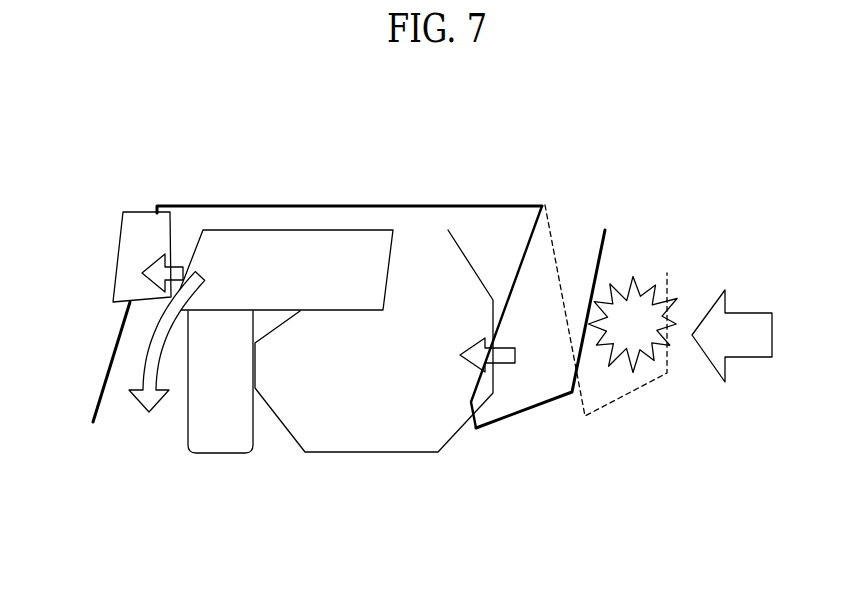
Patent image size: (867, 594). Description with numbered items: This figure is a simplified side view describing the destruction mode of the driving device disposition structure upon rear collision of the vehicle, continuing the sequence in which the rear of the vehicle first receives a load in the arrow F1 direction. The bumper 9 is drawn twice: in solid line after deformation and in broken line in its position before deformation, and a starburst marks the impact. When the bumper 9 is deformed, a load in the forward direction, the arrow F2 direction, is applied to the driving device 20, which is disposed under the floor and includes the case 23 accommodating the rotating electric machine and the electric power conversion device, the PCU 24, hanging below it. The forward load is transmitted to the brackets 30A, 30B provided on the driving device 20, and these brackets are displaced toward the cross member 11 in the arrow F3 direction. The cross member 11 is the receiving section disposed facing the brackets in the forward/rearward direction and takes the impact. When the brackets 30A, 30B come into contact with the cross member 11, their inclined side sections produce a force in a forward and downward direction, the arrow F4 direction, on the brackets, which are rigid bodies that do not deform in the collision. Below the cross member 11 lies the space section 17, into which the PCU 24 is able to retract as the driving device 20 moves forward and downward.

The bumper 9 is at (532, 405).
The cross member 11 is at (142, 233).
The space section 17 is at (127, 414).
The driving device 20 is at (343, 452).
The case 23 is at (372, 432).
The electric power conversion device (PCU) 24 is at (200, 419).
The bracket 30A is at (282, 218).
The bracket 30B is at (295, 248).
The arrow F1 direction F1 is at (745, 320).
The arrow F2 direction F2 is at (507, 366).
The arrow F3 direction F3 is at (177, 260).
The arrow F4 direction F4 is at (145, 345).